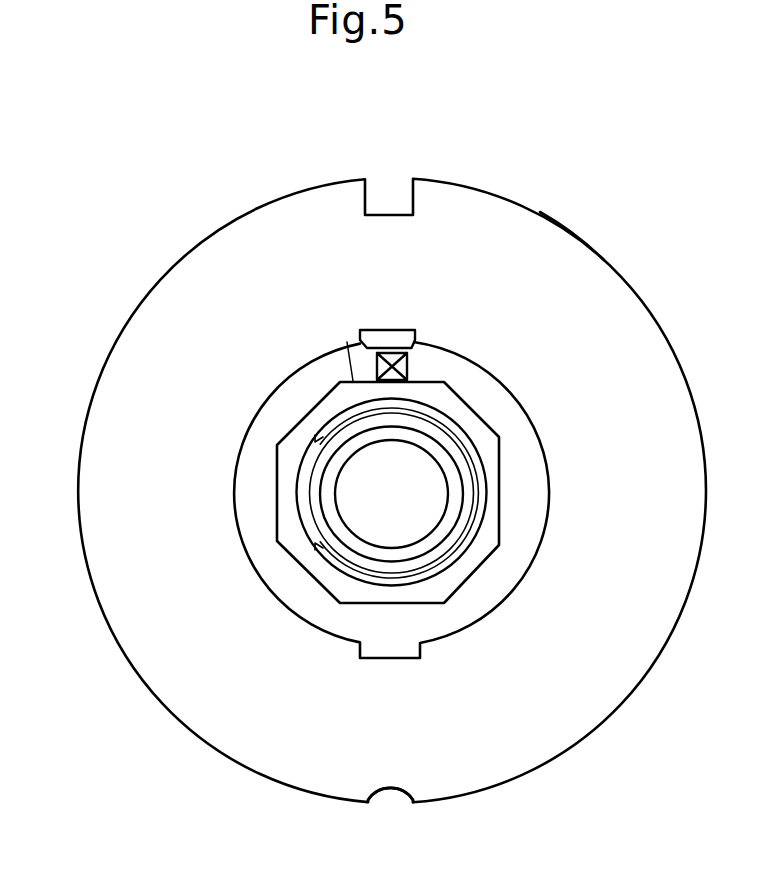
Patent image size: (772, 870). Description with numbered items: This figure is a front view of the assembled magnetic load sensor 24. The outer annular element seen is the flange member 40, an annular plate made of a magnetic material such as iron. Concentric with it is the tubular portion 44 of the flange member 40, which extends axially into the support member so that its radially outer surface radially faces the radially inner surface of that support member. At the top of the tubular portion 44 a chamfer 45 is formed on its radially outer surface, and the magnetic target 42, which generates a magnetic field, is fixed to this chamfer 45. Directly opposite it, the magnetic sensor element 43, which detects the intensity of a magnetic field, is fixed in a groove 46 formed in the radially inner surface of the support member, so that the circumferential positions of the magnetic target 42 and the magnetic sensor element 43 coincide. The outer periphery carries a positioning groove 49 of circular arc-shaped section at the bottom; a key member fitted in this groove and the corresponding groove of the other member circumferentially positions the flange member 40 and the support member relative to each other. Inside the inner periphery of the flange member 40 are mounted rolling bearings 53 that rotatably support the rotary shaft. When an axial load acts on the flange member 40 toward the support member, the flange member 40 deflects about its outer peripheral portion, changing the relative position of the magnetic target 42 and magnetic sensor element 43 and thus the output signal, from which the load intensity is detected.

The magnetic load sensor 24 is at (575, 228).
The flange member 40 is at (620, 276).
The magnetic target 42 is at (410, 370).
The magnetic sensor element 43 is at (397, 340).
The tubular portion 44 is at (303, 412).
The chamfer 45 is at (347, 342).
The groove 46 is at (379, 338).
The positioning groove 49 is at (392, 791).
The rolling bearing 53 is at (315, 500).